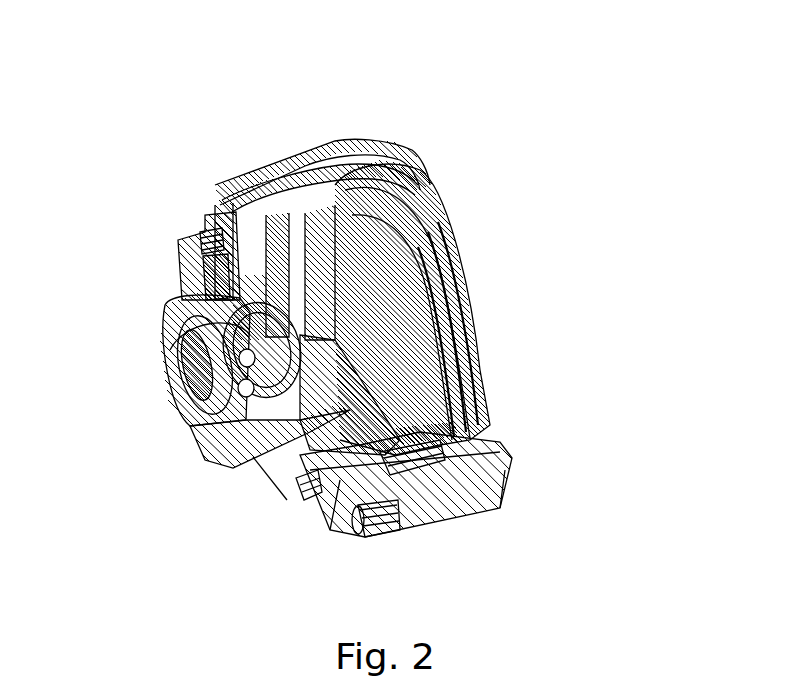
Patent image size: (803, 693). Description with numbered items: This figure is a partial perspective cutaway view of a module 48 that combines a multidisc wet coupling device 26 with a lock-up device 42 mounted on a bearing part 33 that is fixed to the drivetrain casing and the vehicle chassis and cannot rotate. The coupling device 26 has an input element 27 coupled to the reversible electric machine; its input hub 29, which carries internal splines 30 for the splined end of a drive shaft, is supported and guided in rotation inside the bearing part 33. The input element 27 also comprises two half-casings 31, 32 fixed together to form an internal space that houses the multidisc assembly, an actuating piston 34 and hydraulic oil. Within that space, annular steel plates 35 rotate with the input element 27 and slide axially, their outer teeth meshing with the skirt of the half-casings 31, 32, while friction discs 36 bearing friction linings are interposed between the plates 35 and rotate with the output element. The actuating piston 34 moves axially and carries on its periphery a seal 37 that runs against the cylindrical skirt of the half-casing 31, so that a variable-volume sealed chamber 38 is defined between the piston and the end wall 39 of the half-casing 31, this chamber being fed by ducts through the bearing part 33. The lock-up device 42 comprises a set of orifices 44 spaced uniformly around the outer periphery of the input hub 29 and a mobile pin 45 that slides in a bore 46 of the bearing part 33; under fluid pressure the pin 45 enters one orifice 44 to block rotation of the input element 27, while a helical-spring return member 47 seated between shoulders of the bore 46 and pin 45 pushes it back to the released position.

The coupling device 26 is at (344, 107).
The input element 27 is at (307, 495).
The input hub 29 is at (170, 353).
The internal splines 30 is at (177, 398).
The half-casing 31 is at (395, 520).
The half-casing 32 is at (473, 500).
The bearing part 33 is at (183, 300).
The actuating piston 34 is at (335, 232).
The annular plates 35 is at (445, 446).
The friction discs 36 is at (462, 288).
The seal 37 is at (393, 460).
The variable-volume sealed chamber 38 is at (357, 430).
The end wall 39 is at (293, 248).
The lock-up device 42 is at (168, 243).
The orifices 44 is at (245, 392).
The pin 45 is at (240, 323).
The bore 46 is at (206, 240).
The return member 47 is at (213, 283).
The module 48 is at (603, 160).